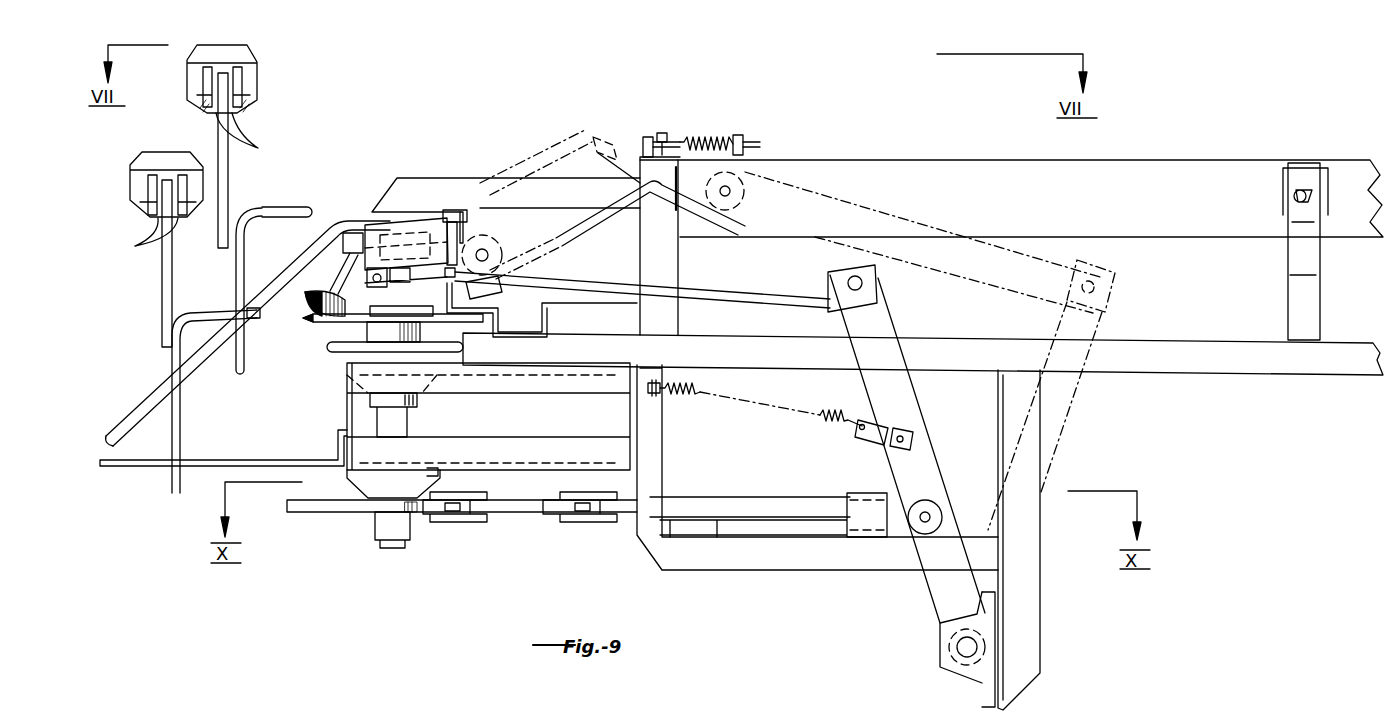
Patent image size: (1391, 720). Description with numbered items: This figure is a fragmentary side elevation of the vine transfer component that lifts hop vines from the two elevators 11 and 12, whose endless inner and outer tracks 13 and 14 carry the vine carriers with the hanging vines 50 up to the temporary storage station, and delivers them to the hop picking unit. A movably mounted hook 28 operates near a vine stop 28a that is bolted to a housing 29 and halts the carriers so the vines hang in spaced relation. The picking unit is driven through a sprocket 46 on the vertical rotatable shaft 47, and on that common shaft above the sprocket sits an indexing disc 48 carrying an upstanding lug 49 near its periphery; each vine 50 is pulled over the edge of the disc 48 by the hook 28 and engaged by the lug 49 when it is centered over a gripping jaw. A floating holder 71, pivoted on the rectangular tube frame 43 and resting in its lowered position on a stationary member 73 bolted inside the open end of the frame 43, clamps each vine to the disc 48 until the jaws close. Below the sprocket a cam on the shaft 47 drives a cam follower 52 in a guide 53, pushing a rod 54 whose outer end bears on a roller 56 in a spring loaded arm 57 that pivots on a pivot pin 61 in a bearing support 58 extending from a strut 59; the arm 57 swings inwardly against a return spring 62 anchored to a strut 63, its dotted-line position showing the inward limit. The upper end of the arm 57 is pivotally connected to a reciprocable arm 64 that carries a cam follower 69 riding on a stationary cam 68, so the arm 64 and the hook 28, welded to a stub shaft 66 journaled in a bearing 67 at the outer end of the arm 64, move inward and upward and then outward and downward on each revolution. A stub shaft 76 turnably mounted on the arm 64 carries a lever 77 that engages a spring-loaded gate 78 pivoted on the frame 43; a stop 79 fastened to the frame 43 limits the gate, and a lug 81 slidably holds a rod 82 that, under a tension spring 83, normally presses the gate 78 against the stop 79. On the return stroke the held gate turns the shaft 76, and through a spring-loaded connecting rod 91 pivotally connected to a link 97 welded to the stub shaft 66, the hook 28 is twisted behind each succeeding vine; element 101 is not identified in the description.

The elevator 11 is at (256, 92).
The elevator 12 is at (125, 178).
The inner track 13 is at (250, 137).
The outer track 14 is at (143, 237).
The hook 28 is at (148, 410).
The vine stop 28a is at (142, 465).
The housing 29 is at (347, 408).
The tube 43 is at (1062, 168).
The sprocket 46 is at (332, 355).
The rotatable shaft 47 is at (405, 425).
The indexing disc 48 is at (327, 324).
The lug 49 is at (302, 313).
The hanging vine 50 is at (227, 282).
The cam follower 52 is at (423, 515).
The guide 53 is at (605, 512).
The rod 54 is at (745, 505).
The roller 56 is at (945, 515).
The spring loaded arm 57 is at (935, 468).
The bearing support 58 is at (940, 650).
The strut 59 is at (1030, 632).
The pivot pin 61 is at (962, 657).
The return spring 62 is at (783, 408).
The strut 63 is at (656, 425).
The reciprocable arm 64 is at (607, 273).
The stub shaft 66 is at (413, 232).
The bearing 67 is at (353, 235).
The stationary cam 68 is at (702, 225).
The cam follower 69 is at (493, 247).
The floating holder 71 is at (383, 200).
The stationary member 73 is at (340, 268).
The stub shaft 76 is at (462, 247).
The lever 77 is at (455, 210).
The spring-loaded gate 78 is at (668, 128).
The stop 79 is at (641, 140).
The lug 81 is at (741, 132).
The rod 82 is at (763, 145).
The tension spring 83 is at (712, 135).
The connecting rod 91 is at (452, 312).
The link 97 is at (315, 291).
The wedge 101 is at (490, 305).